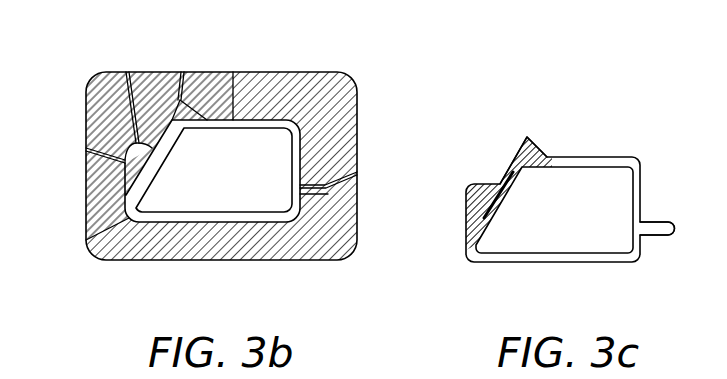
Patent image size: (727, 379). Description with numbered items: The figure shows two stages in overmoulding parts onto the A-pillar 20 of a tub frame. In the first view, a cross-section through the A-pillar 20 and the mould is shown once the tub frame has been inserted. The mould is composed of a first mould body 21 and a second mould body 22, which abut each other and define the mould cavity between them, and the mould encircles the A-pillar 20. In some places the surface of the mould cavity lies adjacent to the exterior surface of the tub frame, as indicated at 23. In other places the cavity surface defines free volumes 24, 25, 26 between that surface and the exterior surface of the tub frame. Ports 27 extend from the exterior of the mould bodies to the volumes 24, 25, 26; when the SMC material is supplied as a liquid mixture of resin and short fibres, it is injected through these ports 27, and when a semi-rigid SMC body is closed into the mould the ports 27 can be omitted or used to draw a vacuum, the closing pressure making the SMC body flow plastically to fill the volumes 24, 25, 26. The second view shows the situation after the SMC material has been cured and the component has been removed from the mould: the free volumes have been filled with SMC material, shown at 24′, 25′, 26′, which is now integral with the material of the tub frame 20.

In FIG. 3B, the A-pillar 20 is at (300, 142).
In FIG. 3C, the A-pillar 20 is at (572, 263).
In FIG. 3B, the first mould body 21 is at (317, 78).
In FIG. 3B, the second mould body 22 is at (155, 80).
In FIG. 3B, the mould cavity surface adjacent to tub frame 23 is at (257, 222).
In FIG. 3B, the free volume 24 is at (145, 168).
In FIG. 3B, the free volume 25 is at (187, 117).
In FIG. 3B, the free volume 26 is at (328, 194).
In FIG. 3B, the ports 27 is at (128, 72).
In FIG. 3C, the cured SMC material 24′ is at (480, 183).
In FIG. 3C, the cured SMC material 25′ is at (523, 137).
In FIG. 3C, the cured SMC material 26′ is at (660, 220).